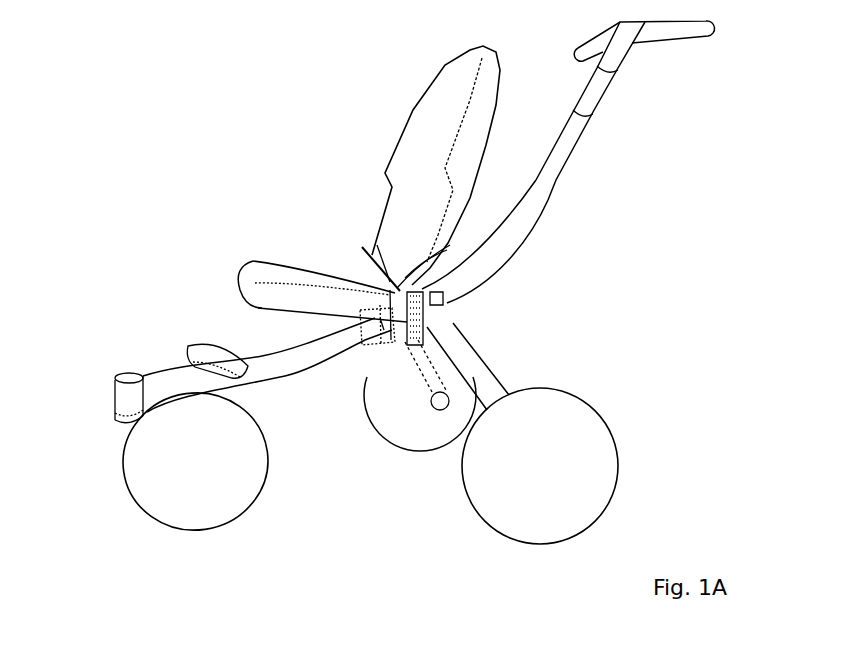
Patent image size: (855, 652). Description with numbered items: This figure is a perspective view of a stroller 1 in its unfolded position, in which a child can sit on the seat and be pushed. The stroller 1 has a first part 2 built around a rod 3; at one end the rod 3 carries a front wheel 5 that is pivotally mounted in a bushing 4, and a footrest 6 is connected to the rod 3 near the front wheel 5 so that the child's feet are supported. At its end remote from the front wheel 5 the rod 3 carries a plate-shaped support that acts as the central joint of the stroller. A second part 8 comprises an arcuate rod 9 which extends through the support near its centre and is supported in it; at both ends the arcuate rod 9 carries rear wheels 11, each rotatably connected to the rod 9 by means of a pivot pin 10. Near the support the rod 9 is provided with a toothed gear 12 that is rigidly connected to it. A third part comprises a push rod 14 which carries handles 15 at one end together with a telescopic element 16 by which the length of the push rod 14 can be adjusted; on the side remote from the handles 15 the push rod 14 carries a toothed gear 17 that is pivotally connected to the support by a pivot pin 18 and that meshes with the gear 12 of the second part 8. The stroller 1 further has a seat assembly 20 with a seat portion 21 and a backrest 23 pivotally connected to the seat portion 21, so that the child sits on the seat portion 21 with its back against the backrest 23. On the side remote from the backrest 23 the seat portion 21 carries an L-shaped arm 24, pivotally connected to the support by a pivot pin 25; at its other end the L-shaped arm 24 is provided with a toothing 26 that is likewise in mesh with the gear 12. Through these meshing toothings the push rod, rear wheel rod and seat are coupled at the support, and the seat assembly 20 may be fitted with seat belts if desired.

The stroller 1 is at (275, 163).
The first part 2 is at (103, 312).
The rod 3 is at (280, 353).
The bushing 4 is at (127, 392).
The front wheel 5 is at (153, 493).
The footrest 6 is at (202, 354).
The second part 8 is at (620, 330).
The arcuate rod 9 is at (473, 365).
The pivot pin 10 is at (433, 410).
The rear wheels 11 is at (391, 420).
The gear 12 is at (447, 330).
The push rod 14 is at (548, 200).
The handles 15 is at (578, 48).
The telescopic element 16 is at (592, 100).
The gear 17 is at (388, 297).
The pivot pin 18 is at (422, 284).
The seat assembly 20 is at (350, 92).
The seat portion 21 is at (256, 276).
The backrest 23 is at (442, 102).
The L-shaped arm 24 is at (372, 275).
The pivot pin 25 is at (370, 337).
The toothing 26 is at (383, 353).